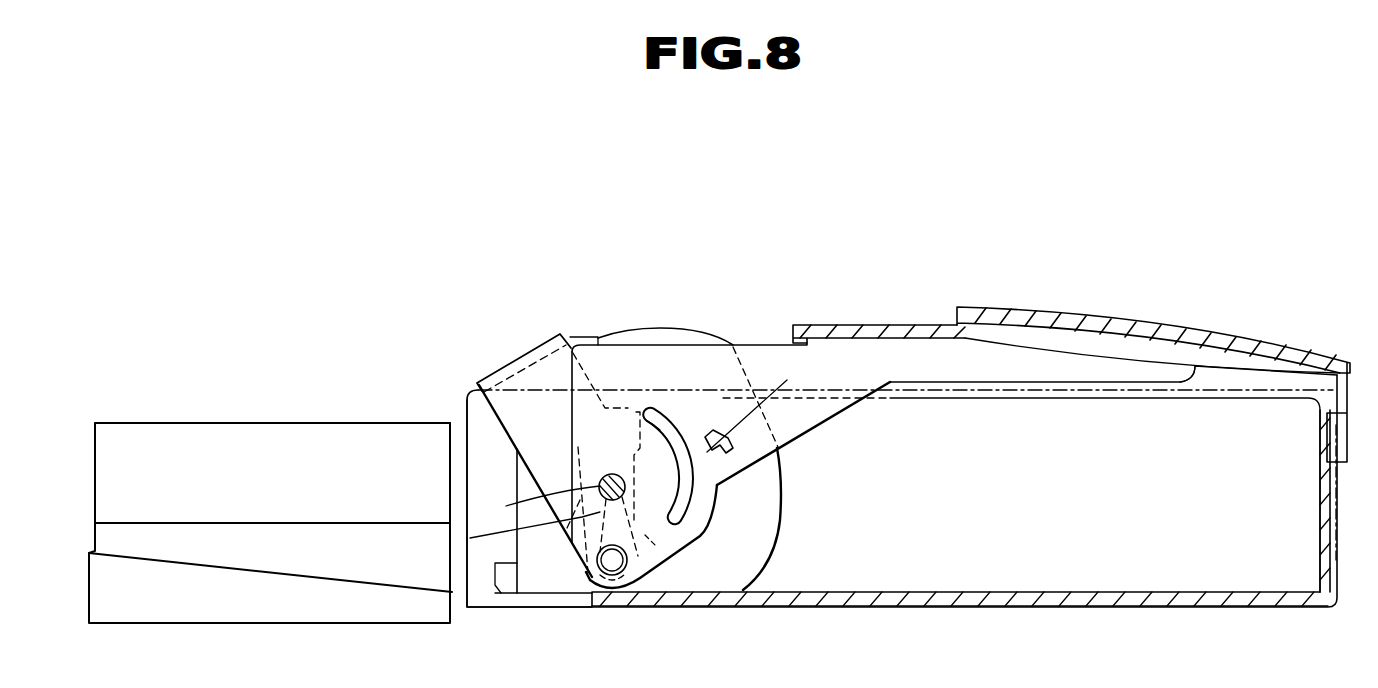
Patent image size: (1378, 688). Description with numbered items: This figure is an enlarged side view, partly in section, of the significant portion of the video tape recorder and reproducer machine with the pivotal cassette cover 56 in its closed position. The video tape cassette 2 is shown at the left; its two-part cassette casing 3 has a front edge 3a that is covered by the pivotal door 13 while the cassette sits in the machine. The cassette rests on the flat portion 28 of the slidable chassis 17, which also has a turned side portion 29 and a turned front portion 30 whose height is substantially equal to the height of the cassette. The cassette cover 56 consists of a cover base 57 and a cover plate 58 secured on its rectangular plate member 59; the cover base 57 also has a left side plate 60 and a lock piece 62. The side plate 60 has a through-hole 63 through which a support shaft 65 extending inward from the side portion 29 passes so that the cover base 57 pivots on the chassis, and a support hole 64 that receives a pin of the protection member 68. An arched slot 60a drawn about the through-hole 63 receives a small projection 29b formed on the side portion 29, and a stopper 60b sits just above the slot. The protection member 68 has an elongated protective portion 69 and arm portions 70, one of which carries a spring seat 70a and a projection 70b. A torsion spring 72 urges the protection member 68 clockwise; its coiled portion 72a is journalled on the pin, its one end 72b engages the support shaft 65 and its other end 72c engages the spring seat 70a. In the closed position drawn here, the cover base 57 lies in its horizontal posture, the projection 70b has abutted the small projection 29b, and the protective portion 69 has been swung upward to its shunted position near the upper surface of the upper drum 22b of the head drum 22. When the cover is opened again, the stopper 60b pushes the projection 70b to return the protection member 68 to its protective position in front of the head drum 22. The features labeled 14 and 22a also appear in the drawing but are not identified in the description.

The video tape cassette 2 is at (913, 398).
The cassette casing 3 is at (1000, 420).
The front edge 3a is at (470, 538).
The pivotal door 13 is at (668, 326).
The lever 14 is at (780, 505).
The slidable chassis 17 is at (1133, 592).
The head drum 22 is at (148, 286).
The lower member 22a is at (182, 528).
The upper drum 22b is at (233, 425).
The flat portion 28 is at (1183, 592).
The turned side portion 29 is at (463, 406).
The small projection 29b is at (650, 407).
The turned front portion 30 is at (1320, 513).
The pivotal cassette cover 56 is at (1148, 206).
The cover base 57 is at (1094, 349).
The cover plate 58 is at (1063, 302).
The rectangular plate member 59 is at (1237, 376).
The left side plate 60 is at (832, 408).
The arched slot 60a is at (660, 410).
The stopper 60b is at (766, 402).
The lock piece 62 is at (1330, 453).
The through-hole 63 is at (610, 473).
The support hole 64 is at (625, 578).
The support shaft 65 is at (536, 506).
The protection member 68 is at (517, 357).
The protective portion 69 is at (542, 338).
The arm portion 70 is at (502, 420).
The spring seat 70a is at (655, 540).
The projection 70b is at (707, 436).
The torsion spring 72 is at (590, 572).
The coiled portion 72a is at (588, 580).
The one end of torsion spring 72b is at (567, 528).
The other end of torsion spring 72c is at (702, 522).